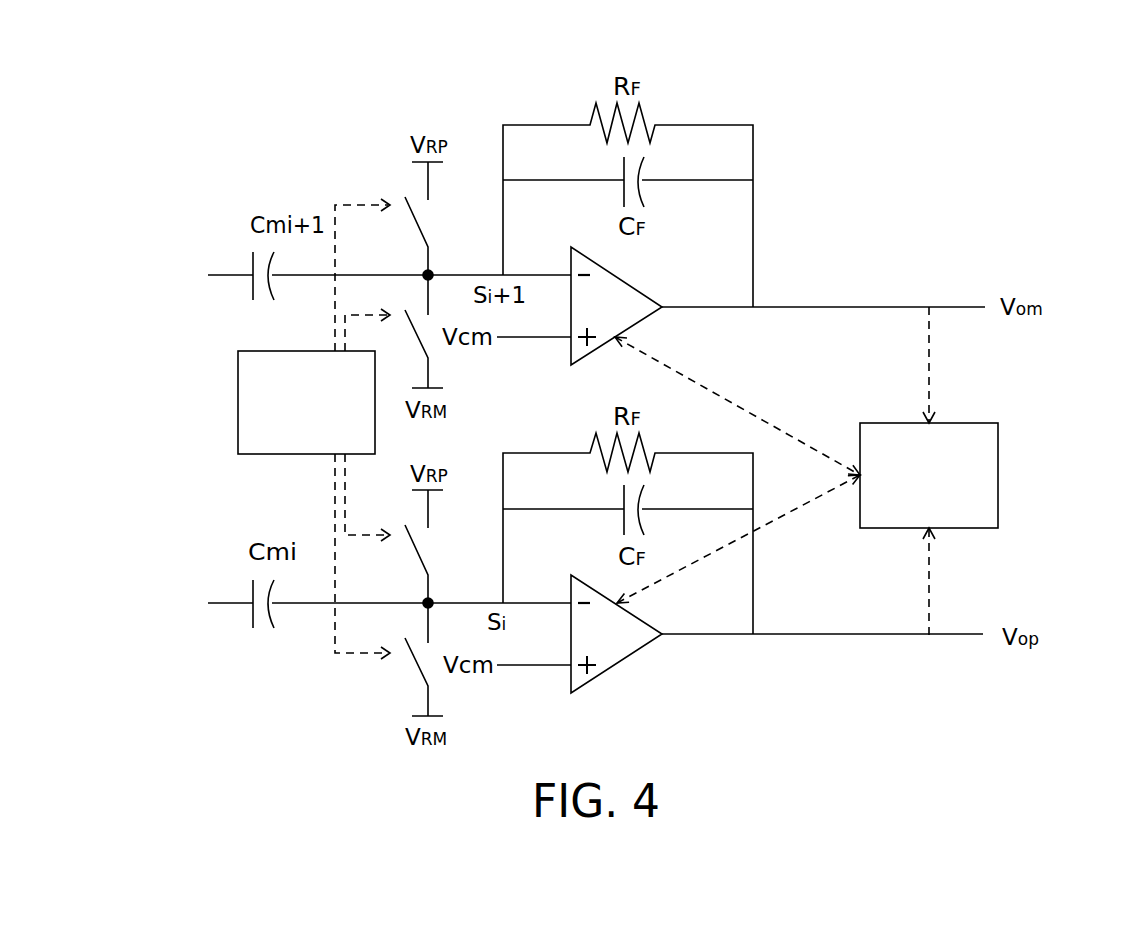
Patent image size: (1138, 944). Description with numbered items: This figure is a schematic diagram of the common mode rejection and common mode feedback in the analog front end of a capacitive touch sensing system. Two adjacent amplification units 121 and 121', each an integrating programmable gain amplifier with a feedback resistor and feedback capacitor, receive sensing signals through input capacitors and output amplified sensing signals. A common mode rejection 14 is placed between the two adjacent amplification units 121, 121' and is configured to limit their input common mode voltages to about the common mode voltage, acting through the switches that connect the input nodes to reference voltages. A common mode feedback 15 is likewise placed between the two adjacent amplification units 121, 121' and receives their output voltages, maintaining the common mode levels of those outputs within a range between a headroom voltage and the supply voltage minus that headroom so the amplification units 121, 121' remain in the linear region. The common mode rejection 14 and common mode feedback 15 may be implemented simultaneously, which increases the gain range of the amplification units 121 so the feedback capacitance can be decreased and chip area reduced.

The common mode rejection 14 is at (238, 408).
The common mode feedback 15 is at (998, 475).
The amplification unit 121 is at (710, 286).
The amplification unit 121' is at (659, 652).